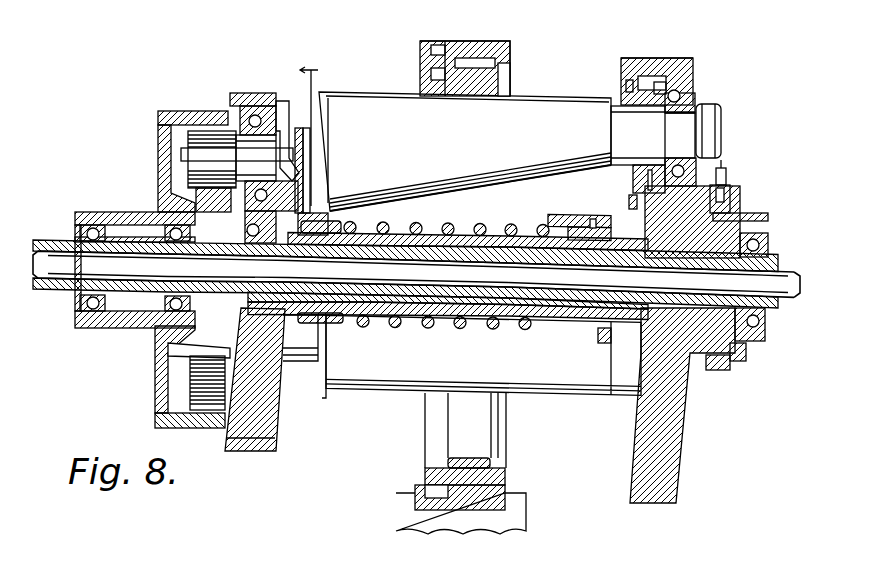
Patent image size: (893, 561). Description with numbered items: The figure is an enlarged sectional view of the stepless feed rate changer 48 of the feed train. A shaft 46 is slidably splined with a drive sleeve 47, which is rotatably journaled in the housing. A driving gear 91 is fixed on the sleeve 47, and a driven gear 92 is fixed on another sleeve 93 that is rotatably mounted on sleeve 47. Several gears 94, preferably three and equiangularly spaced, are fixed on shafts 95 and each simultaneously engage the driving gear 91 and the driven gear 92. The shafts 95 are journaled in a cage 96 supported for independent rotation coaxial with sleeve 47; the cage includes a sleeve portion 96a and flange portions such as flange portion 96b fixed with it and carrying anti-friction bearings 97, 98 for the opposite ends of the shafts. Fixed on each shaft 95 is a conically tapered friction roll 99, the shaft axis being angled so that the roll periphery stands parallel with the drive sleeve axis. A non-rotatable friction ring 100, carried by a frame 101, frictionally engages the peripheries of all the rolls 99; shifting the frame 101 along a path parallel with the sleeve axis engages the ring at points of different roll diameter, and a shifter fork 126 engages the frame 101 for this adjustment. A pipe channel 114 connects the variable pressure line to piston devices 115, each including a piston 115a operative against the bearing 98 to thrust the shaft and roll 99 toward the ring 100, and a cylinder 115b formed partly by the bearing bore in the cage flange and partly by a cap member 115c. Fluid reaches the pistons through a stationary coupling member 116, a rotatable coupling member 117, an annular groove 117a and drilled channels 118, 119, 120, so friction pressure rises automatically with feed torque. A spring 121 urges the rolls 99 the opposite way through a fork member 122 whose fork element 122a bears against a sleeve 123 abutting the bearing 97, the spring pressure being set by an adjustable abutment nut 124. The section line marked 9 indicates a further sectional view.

The section line 9 is at (313, 133).
The shaft 46 is at (773, 286).
The sleeve 47 is at (505, 304).
The stepless feed rate changer 48 is at (274, 64).
The driving gear 91 is at (200, 330).
The driven gear 92 is at (150, 403).
The sleeve 93 is at (133, 322).
The gear 94 is at (247, 142).
The shaft 95 is at (223, 160).
The cage 96 is at (284, 421).
The sleeve portion 96a is at (445, 320).
The flange portion 96b is at (265, 432).
The anti-friction bearing 97 is at (232, 90).
The anti-friction bearing 98 is at (690, 88).
The conically tapered friction roll 99 is at (370, 105).
The friction ring 100 is at (466, 86).
The frame 101 is at (502, 42).
The pipe channel 114 is at (718, 167).
The piston device 115 is at (613, 48).
The piston 115a is at (655, 80).
The cylinder 115b is at (645, 55).
The cap member 115c is at (620, 78).
The stationary coupling member 116 is at (723, 188).
The rotatable coupling member 117 is at (698, 350).
The annular groove 117a is at (725, 360).
The drilled channel 118 is at (763, 209).
The drilled channel 119 is at (760, 224).
The drilled channel 120 is at (621, 190).
The spring 121 is at (462, 211).
The fork member 122 is at (322, 216).
The fork element 122a is at (292, 153).
The sleeve 123 is at (283, 137).
The adjustable abutment nut 124 is at (552, 208).
The shifter fork 126 is at (498, 513).